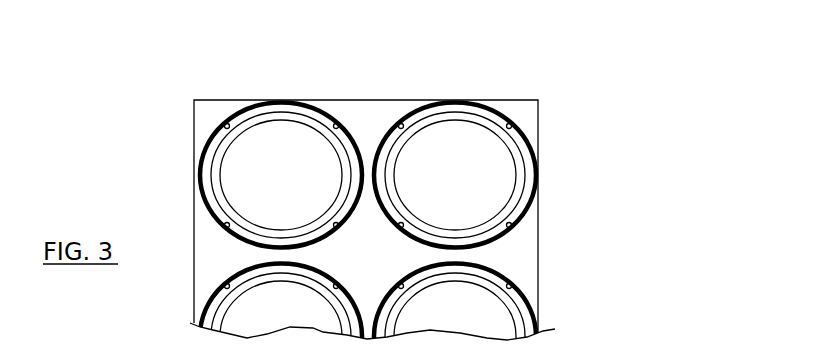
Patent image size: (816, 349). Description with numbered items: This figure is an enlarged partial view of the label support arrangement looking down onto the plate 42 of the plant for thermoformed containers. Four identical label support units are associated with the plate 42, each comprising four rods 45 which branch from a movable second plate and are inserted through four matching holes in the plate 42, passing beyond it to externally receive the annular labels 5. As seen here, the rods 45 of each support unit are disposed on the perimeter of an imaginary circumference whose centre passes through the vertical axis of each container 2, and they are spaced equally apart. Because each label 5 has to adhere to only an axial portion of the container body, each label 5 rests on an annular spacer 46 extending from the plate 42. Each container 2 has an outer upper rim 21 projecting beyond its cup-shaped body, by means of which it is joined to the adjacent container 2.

The container 2 is at (289, 120).
The annular label 5 is at (480, 112).
The rod 45 is at (399, 124).
The annular spacer 46 is at (504, 113).
The plate 42 is at (540, 290).
The outer upper rim 21 is at (665, 348).